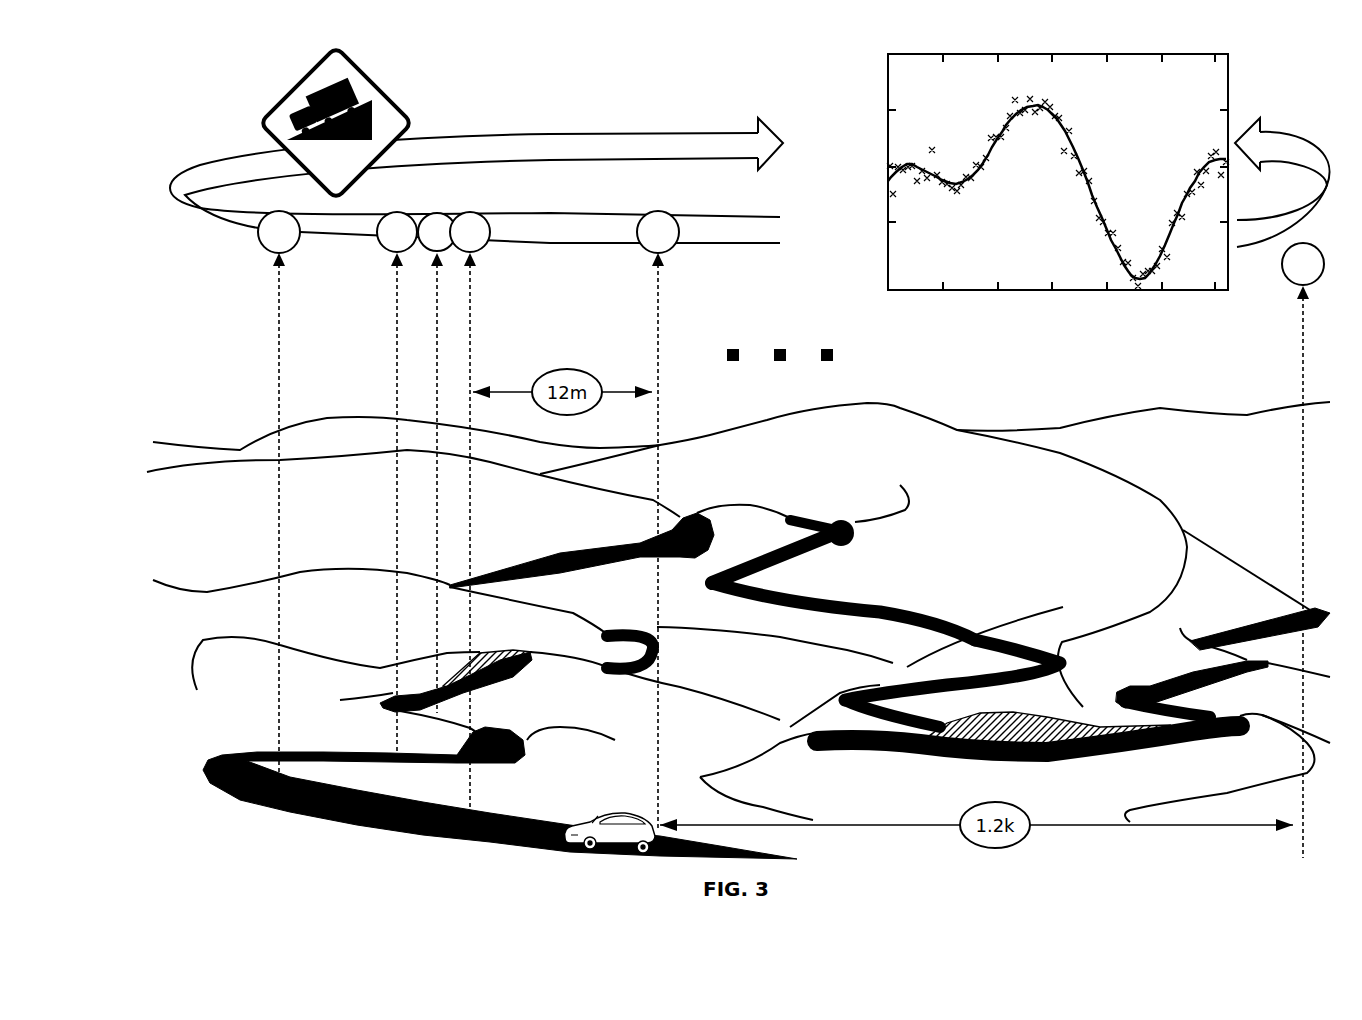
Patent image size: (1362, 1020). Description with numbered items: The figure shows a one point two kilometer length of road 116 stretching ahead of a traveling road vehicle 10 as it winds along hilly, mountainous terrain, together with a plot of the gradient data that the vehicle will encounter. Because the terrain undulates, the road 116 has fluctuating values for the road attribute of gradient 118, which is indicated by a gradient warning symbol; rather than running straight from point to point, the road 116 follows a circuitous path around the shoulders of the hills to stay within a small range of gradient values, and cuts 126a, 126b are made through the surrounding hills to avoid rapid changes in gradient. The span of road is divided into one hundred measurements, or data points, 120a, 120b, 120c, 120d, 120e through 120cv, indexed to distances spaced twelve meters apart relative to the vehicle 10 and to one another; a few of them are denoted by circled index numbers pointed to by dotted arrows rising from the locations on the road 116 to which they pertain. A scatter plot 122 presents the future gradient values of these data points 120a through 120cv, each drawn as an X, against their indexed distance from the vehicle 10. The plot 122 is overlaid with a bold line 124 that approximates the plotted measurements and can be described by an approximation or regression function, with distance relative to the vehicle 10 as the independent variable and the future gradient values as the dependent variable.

The road vehicle 10 is at (607, 816).
The road 116 is at (260, 818).
The gradient 118 is at (322, 187).
The measurement or data point 120a is at (670, 248).
The measurement or data point 120b is at (484, 246).
The measurement or data point 120c is at (285, 251).
The measurement or data point 120d is at (378, 238).
The measurement or data point 120e is at (462, 213).
The measurement or data point 120cv is at (1293, 284).
The scatter plot 122 is at (908, 92).
The bold line 124 is at (1090, 222).
The cut 126a is at (540, 645).
The cut 126b is at (1036, 697).